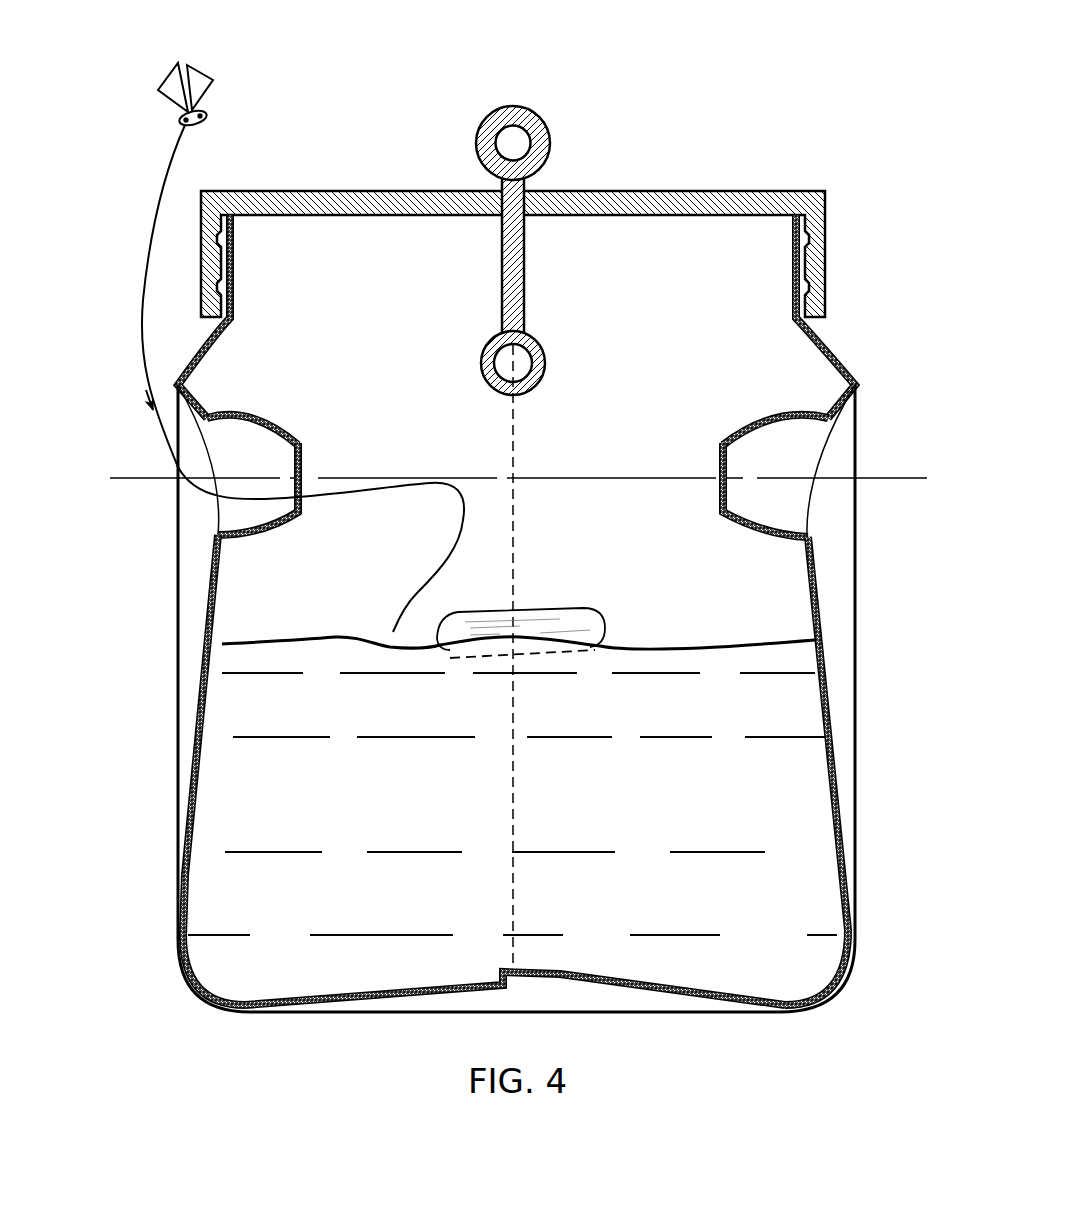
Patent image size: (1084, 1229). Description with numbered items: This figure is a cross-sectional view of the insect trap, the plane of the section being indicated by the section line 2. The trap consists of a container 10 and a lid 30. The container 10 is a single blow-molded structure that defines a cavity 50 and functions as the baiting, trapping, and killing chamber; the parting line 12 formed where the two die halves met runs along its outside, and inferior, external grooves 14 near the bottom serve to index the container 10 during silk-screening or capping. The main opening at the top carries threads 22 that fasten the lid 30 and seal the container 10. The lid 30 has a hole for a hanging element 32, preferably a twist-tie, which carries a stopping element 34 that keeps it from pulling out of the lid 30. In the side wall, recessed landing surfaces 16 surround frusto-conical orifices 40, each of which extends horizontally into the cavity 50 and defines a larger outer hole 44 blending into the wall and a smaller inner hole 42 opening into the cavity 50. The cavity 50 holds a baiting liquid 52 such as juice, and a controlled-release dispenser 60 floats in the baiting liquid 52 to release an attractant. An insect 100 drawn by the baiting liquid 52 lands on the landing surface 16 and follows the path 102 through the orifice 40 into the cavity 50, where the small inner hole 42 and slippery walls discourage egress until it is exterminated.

The insects and similar subjects 100 is at (225, 97).
The path 102 is at (150, 402).
The lid 30 is at (668, 190).
The hanging element 32 is at (476, 150).
The stopping element 34 is at (483, 367).
The cavity 50 is at (643, 320).
The threads 22 is at (827, 247).
The container 10 is at (843, 342).
The parting line 12 is at (518, 432).
The frusto-conical orifice 40 is at (255, 420).
The inner hole 42 is at (302, 458).
The outer hole 44 is at (213, 515).
The landing surface 16 is at (207, 640).
The inferior, external grooves 14 is at (514, 980).
The baiting liquid 52 is at (337, 632).
The controlled-release dispenser 60 is at (553, 602).
The section line 2 is at (177, 478).